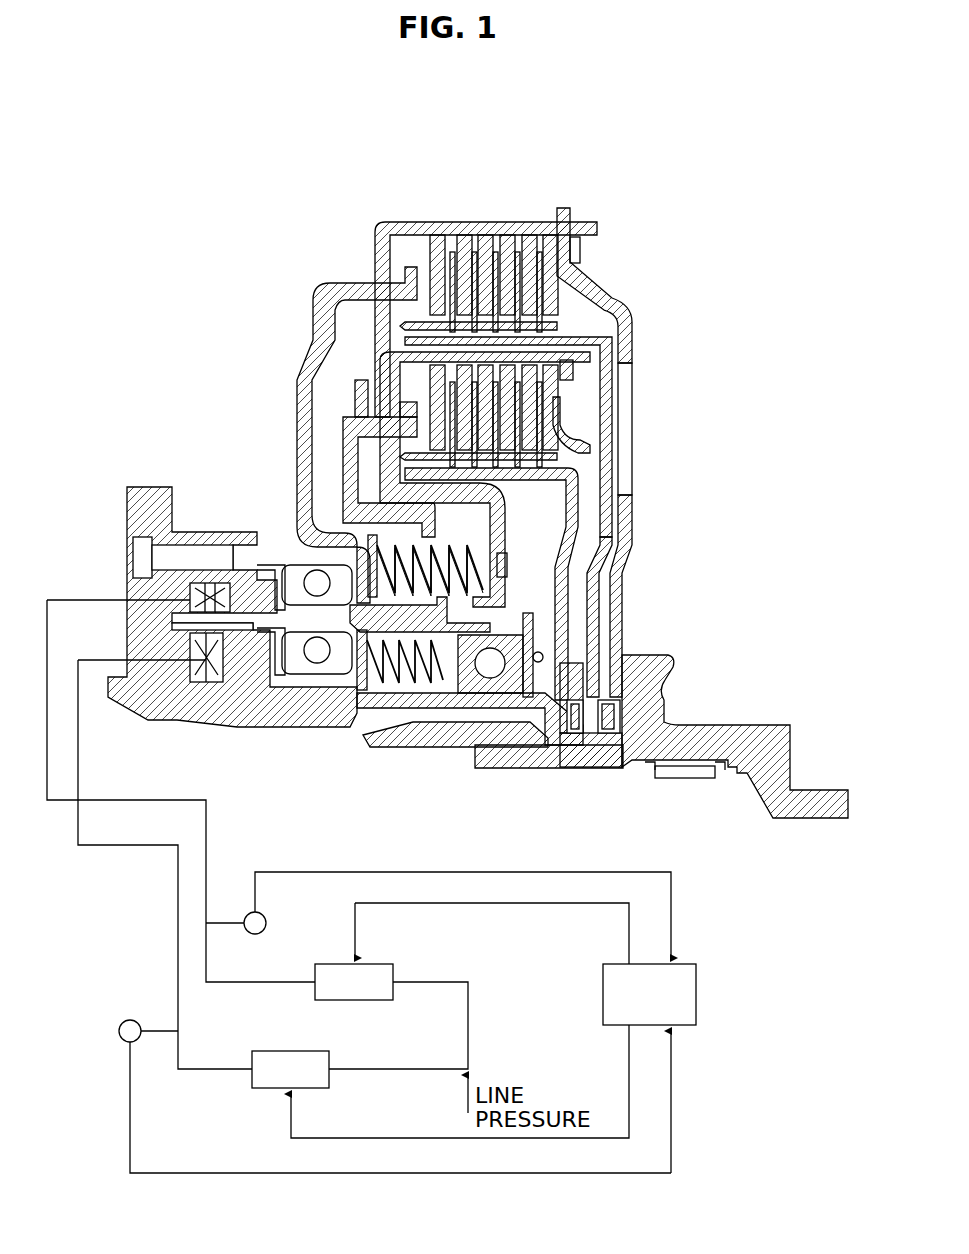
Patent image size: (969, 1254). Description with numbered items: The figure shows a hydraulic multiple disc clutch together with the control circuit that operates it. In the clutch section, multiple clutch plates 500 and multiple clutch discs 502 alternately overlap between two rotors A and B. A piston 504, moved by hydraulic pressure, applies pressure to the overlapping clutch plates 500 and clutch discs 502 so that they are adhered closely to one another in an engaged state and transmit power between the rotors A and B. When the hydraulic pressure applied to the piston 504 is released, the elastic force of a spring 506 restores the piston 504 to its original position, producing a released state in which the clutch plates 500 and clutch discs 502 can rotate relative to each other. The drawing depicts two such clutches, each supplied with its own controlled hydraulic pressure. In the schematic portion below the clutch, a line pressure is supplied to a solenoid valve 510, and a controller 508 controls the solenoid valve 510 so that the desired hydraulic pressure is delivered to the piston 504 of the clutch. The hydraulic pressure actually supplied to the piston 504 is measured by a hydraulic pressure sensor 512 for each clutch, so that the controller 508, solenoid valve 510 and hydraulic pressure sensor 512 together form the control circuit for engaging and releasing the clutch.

The rotor A is at (428, 222).
The rotor B is at (612, 333).
The clutch plates 500 is at (528, 237).
The clutch discs 502 is at (539, 295).
The piston 504 is at (245, 597).
The spring 506 is at (490, 538).
The controller 508 is at (696, 993).
The solenoid valve 510 is at (254, 1085).
The hydraulic pressure sensor 512 is at (121, 1022).